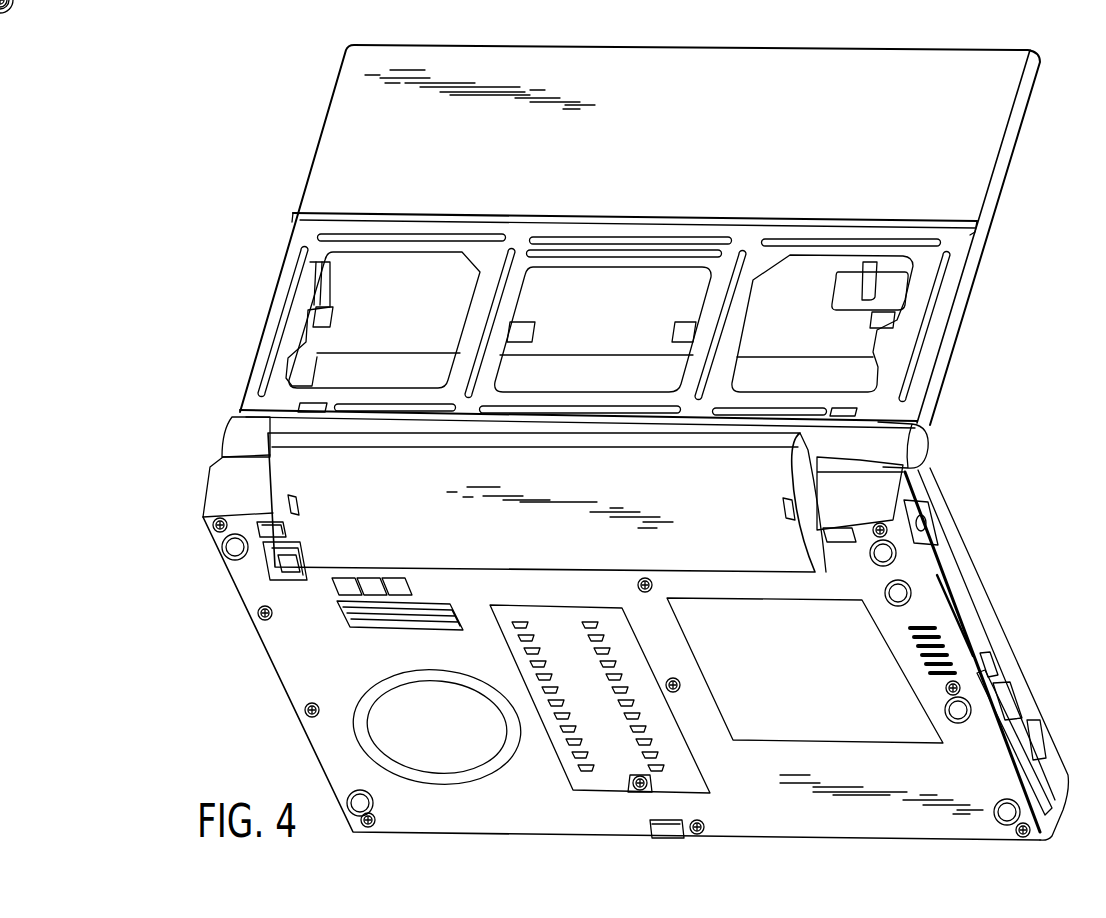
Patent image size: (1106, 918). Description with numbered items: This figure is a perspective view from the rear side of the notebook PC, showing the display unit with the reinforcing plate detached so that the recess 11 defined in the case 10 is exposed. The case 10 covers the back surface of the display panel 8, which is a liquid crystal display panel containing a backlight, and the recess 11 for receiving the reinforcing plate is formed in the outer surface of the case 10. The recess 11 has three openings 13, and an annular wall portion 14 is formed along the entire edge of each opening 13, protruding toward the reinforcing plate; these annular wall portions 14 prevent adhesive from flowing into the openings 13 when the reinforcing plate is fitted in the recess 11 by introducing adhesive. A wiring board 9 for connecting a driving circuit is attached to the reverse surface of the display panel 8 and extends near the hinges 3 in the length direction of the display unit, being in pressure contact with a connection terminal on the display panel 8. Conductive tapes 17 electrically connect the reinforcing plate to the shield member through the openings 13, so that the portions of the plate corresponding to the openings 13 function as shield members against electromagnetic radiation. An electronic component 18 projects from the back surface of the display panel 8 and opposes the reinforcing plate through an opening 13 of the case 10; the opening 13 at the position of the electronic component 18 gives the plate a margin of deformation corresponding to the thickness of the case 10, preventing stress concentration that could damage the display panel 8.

The hinges 3 is at (855, 440).
The display panel 8 is at (358, 262).
The wiring board 9 is at (312, 367).
The case 10 is at (972, 186).
The recess 11 is at (944, 303).
The openings 13 is at (416, 265).
The annular wall portion 14 is at (472, 300).
The conductive tapes 17 is at (330, 314).
The electronic component 18 is at (868, 270).